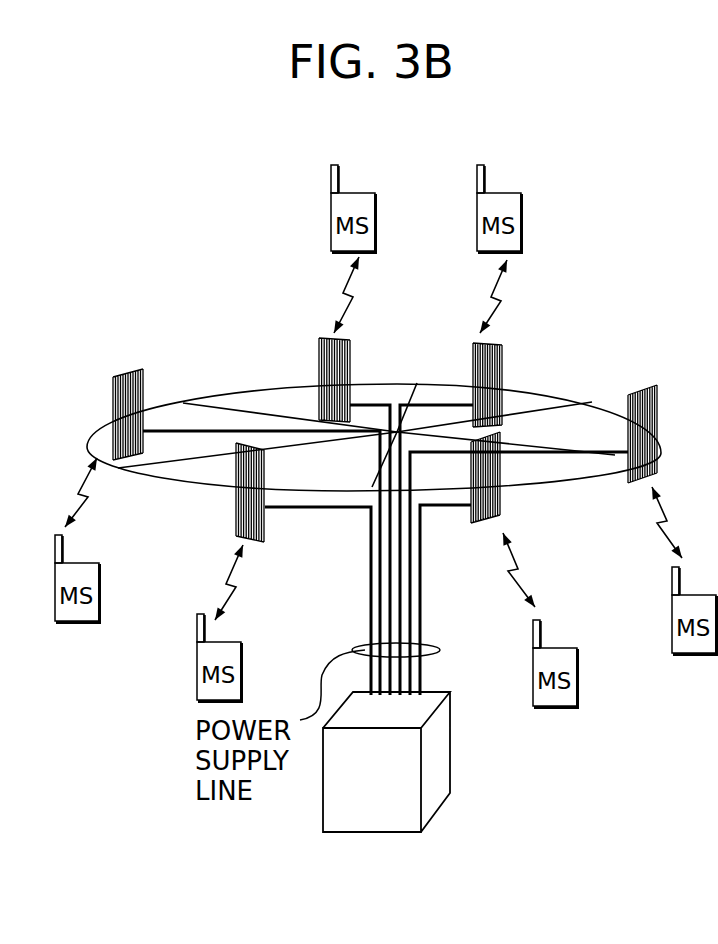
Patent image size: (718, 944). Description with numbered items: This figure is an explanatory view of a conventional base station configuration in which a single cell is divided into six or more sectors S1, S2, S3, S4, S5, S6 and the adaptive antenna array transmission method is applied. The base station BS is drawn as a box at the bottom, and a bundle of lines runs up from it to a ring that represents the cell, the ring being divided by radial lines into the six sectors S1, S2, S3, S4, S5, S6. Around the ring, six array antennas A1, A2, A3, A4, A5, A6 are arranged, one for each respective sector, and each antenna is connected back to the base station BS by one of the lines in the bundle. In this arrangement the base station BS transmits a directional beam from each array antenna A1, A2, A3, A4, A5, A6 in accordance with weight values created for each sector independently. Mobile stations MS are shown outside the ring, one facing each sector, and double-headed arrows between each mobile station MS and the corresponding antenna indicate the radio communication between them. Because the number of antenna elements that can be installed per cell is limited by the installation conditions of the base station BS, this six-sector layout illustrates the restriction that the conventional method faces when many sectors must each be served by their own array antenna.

The sector S1 is at (199, 472).
The sector S2 is at (92, 440).
The sector S3 is at (290, 397).
The sector S4 is at (437, 387).
The sector S5 is at (598, 417).
The sector S6 is at (548, 472).
The array antenna A1 is at (263, 540).
The array antenna A2 is at (145, 369).
The array antenna A3 is at (350, 350).
The array antenna A4 is at (503, 357).
The array antenna A5 is at (657, 430).
The array antenna A6 is at (470, 527).
The base station BS is at (386, 737).
The mobile station MS is at (386, 436).